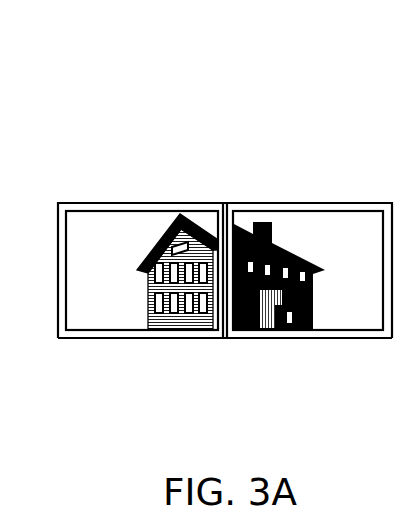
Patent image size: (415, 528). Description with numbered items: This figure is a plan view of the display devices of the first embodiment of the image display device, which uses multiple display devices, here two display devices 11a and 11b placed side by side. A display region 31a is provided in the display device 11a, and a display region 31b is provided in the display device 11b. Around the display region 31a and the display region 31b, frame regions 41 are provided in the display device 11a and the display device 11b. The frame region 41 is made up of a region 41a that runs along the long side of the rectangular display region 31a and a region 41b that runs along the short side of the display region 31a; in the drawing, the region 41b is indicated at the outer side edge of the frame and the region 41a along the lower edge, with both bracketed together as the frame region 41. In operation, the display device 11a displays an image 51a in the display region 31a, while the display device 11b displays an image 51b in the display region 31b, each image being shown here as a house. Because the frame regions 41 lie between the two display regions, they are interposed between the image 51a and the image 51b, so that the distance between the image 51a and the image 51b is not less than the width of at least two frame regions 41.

The display device 11a is at (167, 108).
The display device 11b is at (337, 108).
The display region 31a is at (131, 210).
The display region 31b is at (309, 210).
The frame region 41 is at (206, 329).
The region along the long side 41a is at (225, 374).
The region along the short side 41b is at (58, 273).
The image 51a is at (125, 300).
The image 51b is at (350, 296).